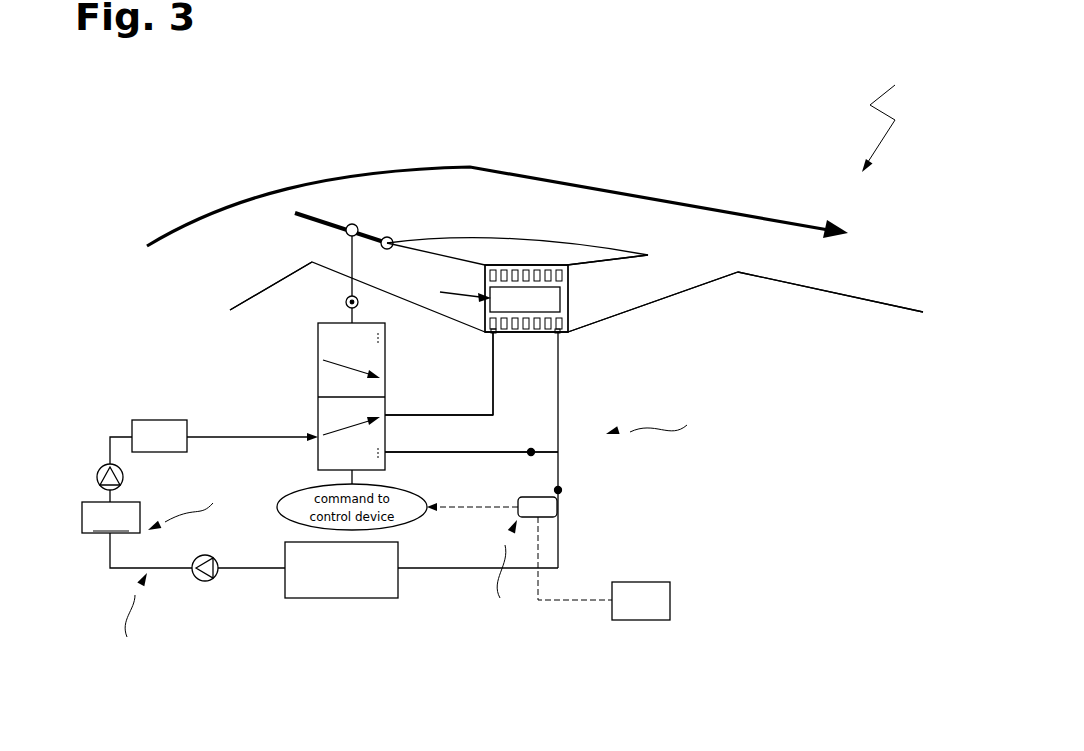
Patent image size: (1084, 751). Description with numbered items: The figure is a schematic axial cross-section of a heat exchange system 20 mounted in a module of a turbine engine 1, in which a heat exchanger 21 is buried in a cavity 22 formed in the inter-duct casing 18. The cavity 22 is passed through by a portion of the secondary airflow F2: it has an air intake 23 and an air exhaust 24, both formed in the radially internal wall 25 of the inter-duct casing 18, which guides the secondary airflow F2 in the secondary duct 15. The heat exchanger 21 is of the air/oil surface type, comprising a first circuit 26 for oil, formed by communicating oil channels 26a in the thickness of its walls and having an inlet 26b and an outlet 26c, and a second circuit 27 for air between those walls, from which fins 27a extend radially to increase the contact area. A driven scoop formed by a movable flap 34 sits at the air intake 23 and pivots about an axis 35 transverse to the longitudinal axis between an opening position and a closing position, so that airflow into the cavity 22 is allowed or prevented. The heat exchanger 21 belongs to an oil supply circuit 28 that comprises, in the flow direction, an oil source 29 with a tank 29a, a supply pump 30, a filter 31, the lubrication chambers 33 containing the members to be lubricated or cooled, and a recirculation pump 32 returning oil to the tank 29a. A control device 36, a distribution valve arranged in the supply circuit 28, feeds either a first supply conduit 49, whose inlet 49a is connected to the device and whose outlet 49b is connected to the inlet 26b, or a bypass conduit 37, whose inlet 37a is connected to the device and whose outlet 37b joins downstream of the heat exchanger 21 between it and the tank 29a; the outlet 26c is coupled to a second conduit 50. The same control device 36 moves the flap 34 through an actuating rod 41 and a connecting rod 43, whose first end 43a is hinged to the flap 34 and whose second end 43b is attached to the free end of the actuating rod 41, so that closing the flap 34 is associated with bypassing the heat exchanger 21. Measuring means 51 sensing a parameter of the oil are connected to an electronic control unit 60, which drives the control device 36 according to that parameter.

The turbine engine 1 is at (882, 123).
The secondary airflow F2 is at (212, 208).
The secondary duct 15 is at (672, 164).
The inter-duct casing 18 is at (876, 318).
The heat exchange system 20 is at (661, 421).
The heat exchanger 21 is at (538, 245).
The cavity 22 is at (633, 275).
The air intake 23 is at (337, 255).
The air exhaust 24 is at (682, 262).
The radially internal wall 25 is at (810, 290).
The first circuit 26 is at (500, 252).
The oil channels 26a is at (567, 273).
The inlet 26b is at (490, 333).
The outlet 26c is at (583, 333).
The second circuit 27 is at (487, 297).
The fins 27a is at (537, 302).
The oil supply circuit 28 is at (334, 601).
The oil source 29 is at (196, 512).
The tank 29a is at (111, 517).
The supply pump 30 is at (125, 475).
The filter 31 is at (148, 423).
The recirculation pump 32 is at (203, 583).
The lubrication chambers 33 is at (322, 590).
The movable flap 34 is at (343, 230).
The axis 35 is at (388, 240).
The control device 36 is at (285, 375).
The bypass conduit 37 is at (560, 490).
The inlet 37a is at (397, 452).
The outlet 37b is at (531, 452).
The actuating rod 41 is at (345, 312).
The connecting rod 43 is at (343, 278).
The first end 43a is at (366, 228).
The second end 43b is at (347, 280).
The first supply conduit 49 is at (497, 390).
The inlet 49a is at (400, 418).
The outlet 49b is at (497, 360).
The second conduit 50 is at (560, 493).
The measuring means 51 is at (502, 574).
The electronic control unit 60 is at (622, 614).